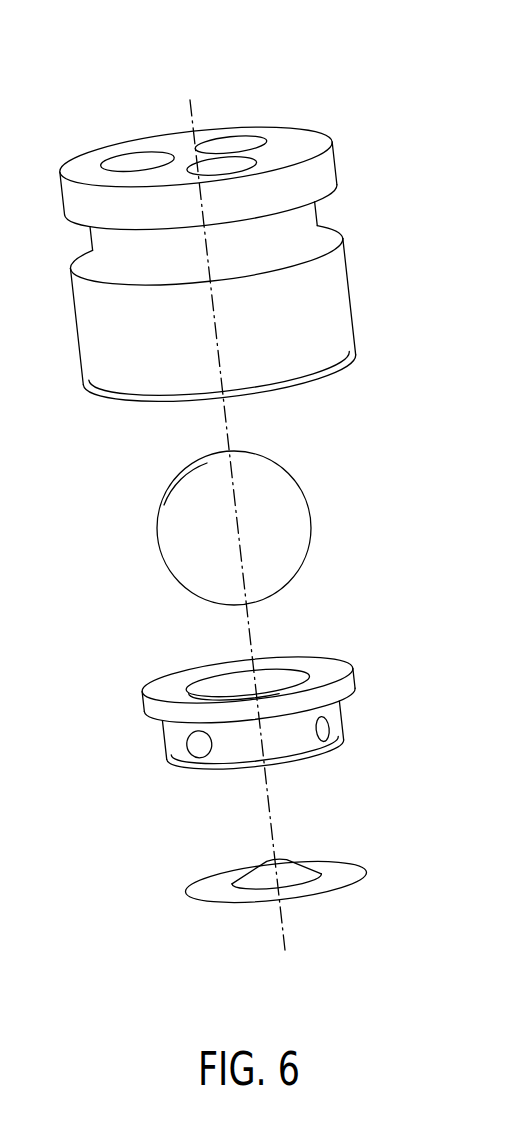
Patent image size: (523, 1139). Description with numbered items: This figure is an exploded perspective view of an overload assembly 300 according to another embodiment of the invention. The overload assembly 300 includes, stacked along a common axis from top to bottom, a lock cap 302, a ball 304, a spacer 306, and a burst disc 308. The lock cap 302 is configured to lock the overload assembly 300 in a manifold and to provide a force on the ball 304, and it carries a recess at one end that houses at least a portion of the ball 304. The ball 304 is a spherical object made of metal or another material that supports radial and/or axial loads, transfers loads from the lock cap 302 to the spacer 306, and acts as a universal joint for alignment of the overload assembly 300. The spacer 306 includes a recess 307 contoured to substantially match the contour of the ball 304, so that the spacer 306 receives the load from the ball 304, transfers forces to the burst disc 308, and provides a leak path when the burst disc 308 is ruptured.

The overload assembly 300 is at (320, 60).
The lock cap 302 is at (332, 283).
The ball 304 is at (288, 493).
The spacer 306 is at (342, 693).
The recess 307 is at (277, 658).
The burst disc 308 is at (353, 870).